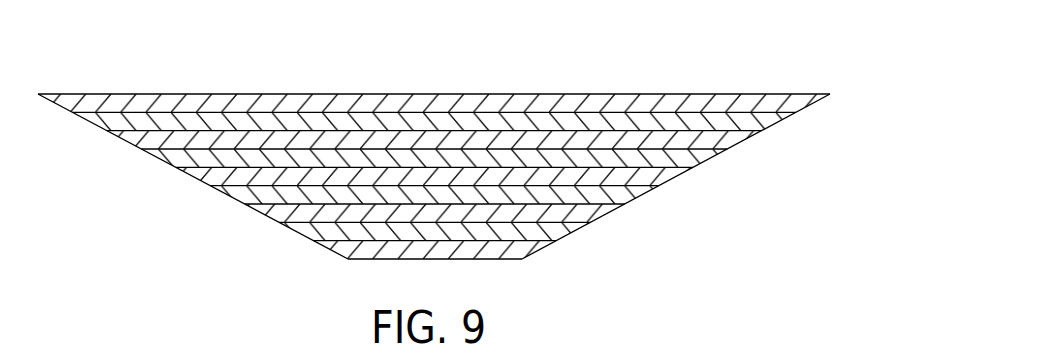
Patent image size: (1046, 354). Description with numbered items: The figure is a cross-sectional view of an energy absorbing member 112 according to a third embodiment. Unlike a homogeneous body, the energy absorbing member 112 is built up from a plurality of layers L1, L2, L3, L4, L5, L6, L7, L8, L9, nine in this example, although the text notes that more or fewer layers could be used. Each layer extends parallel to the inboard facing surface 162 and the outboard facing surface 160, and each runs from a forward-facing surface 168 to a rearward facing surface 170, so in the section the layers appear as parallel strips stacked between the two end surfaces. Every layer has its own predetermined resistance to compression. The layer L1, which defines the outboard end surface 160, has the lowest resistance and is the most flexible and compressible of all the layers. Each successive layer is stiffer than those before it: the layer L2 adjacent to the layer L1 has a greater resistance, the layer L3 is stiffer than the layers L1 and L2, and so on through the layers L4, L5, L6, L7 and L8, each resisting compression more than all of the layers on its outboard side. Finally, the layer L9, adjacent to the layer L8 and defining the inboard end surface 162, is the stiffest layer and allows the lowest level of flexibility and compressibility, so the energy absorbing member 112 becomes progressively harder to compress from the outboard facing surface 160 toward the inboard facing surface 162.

The energy absorbing member 112 is at (463, 163).
The inboard facing surface 162 is at (582, 94).
The outboard facing surface 160 is at (471, 259).
The forward-facing surface 168 is at (211, 186).
The rearward facing surface 170 is at (640, 190).
The layer L1 is at (532, 252).
The layer L2 is at (573, 232).
The layer L3 is at (603, 213).
The layer L4 is at (632, 200).
The layer L5 is at (672, 182).
The layer L6 is at (712, 160).
The layer L7 is at (742, 143).
The layer L8 is at (777, 123).
The layer L9 is at (808, 105).